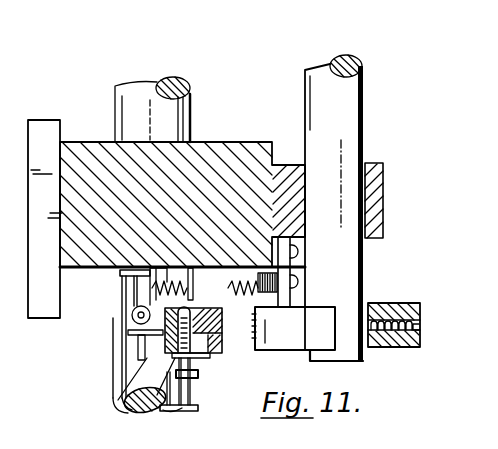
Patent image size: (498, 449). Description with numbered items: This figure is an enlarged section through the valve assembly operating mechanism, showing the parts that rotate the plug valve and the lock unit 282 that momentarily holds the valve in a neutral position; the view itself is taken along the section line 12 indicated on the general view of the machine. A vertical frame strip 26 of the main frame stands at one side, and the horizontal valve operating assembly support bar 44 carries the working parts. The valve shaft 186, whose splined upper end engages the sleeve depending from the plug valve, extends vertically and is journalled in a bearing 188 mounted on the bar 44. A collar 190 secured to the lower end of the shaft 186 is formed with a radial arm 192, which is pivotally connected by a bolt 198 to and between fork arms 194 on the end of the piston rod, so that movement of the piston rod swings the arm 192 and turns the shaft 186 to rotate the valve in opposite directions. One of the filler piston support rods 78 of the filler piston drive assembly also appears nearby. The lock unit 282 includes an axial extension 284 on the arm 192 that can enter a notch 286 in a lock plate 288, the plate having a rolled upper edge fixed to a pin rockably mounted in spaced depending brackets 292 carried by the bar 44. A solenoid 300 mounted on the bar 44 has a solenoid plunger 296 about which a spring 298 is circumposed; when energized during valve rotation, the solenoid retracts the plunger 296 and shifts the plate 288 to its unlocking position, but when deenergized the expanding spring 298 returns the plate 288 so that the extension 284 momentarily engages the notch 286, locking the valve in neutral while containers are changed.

The frame strip 26 is at (43, 136).
The valve operating assembly support bar 44 is at (210, 153).
The valve shaft 186 is at (318, 82).
The bearing 188 is at (382, 168).
The collar 190 is at (393, 307).
The solenoid 300 is at (292, 279).
The solenoid plunger 296 is at (220, 297).
The radial arm 192 is at (252, 342).
The bolt 198 is at (205, 373).
The depending brackets 292 is at (120, 281).
The lock unit 282 is at (120, 294).
The spring 298 is at (150, 283).
The lock plate 288 is at (130, 334).
The axial extension 284 is at (124, 348).
The notch 286 is at (124, 387).
The fork arms 194 is at (145, 410).
The filler piston support rod 78 is at (178, 410).
The spring 12 is at (192, 276).